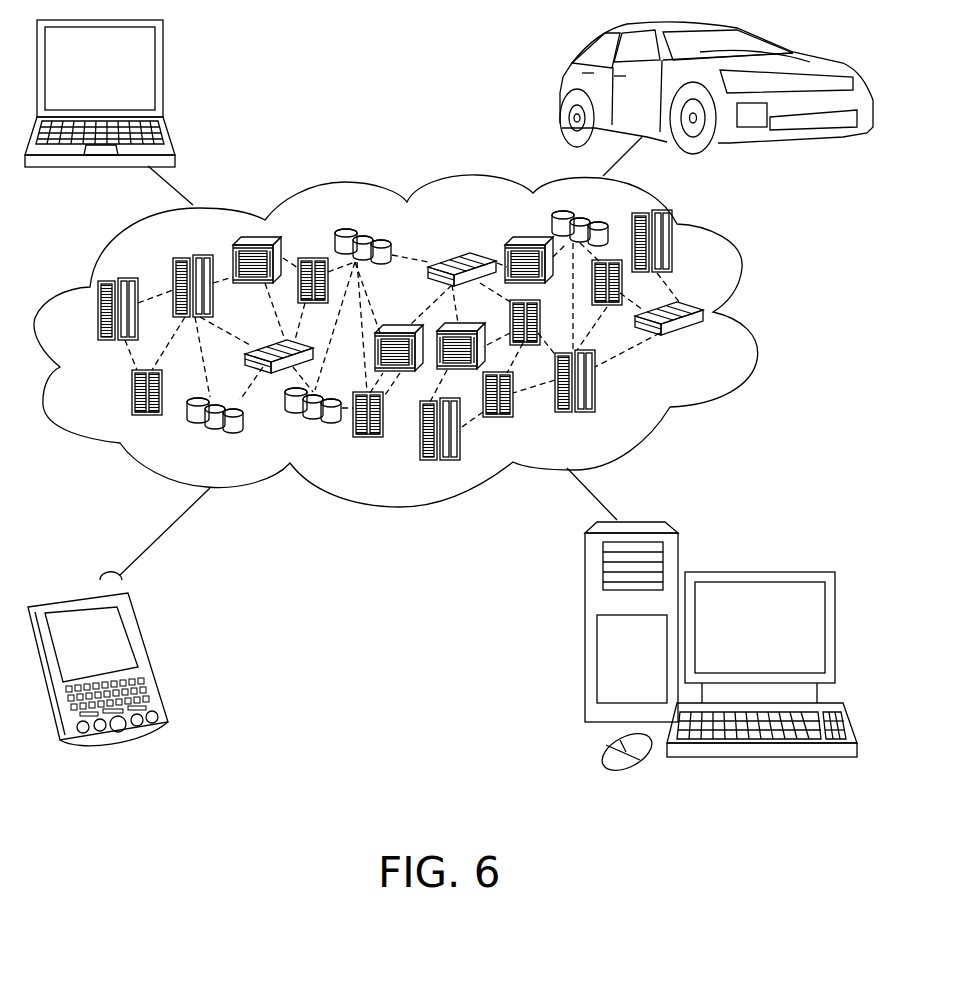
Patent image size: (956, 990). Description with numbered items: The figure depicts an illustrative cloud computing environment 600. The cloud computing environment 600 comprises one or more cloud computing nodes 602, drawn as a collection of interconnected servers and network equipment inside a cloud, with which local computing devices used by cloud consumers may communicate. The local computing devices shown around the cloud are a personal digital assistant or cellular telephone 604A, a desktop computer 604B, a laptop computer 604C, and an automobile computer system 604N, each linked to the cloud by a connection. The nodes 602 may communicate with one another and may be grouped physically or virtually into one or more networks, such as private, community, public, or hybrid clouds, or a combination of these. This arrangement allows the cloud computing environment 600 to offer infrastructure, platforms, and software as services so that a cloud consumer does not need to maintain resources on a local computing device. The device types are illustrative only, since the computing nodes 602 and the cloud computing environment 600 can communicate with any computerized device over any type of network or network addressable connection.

The cloud computing environment 600 is at (738, 298).
The cloud computing nodes 602 is at (708, 346).
The personal digital assistant (PDA) or cellular telephone 604A is at (143, 623).
The desktop computer 604B is at (747, 571).
The laptop computer 604C is at (162, 55).
The automobile computer system 604N is at (560, 91).